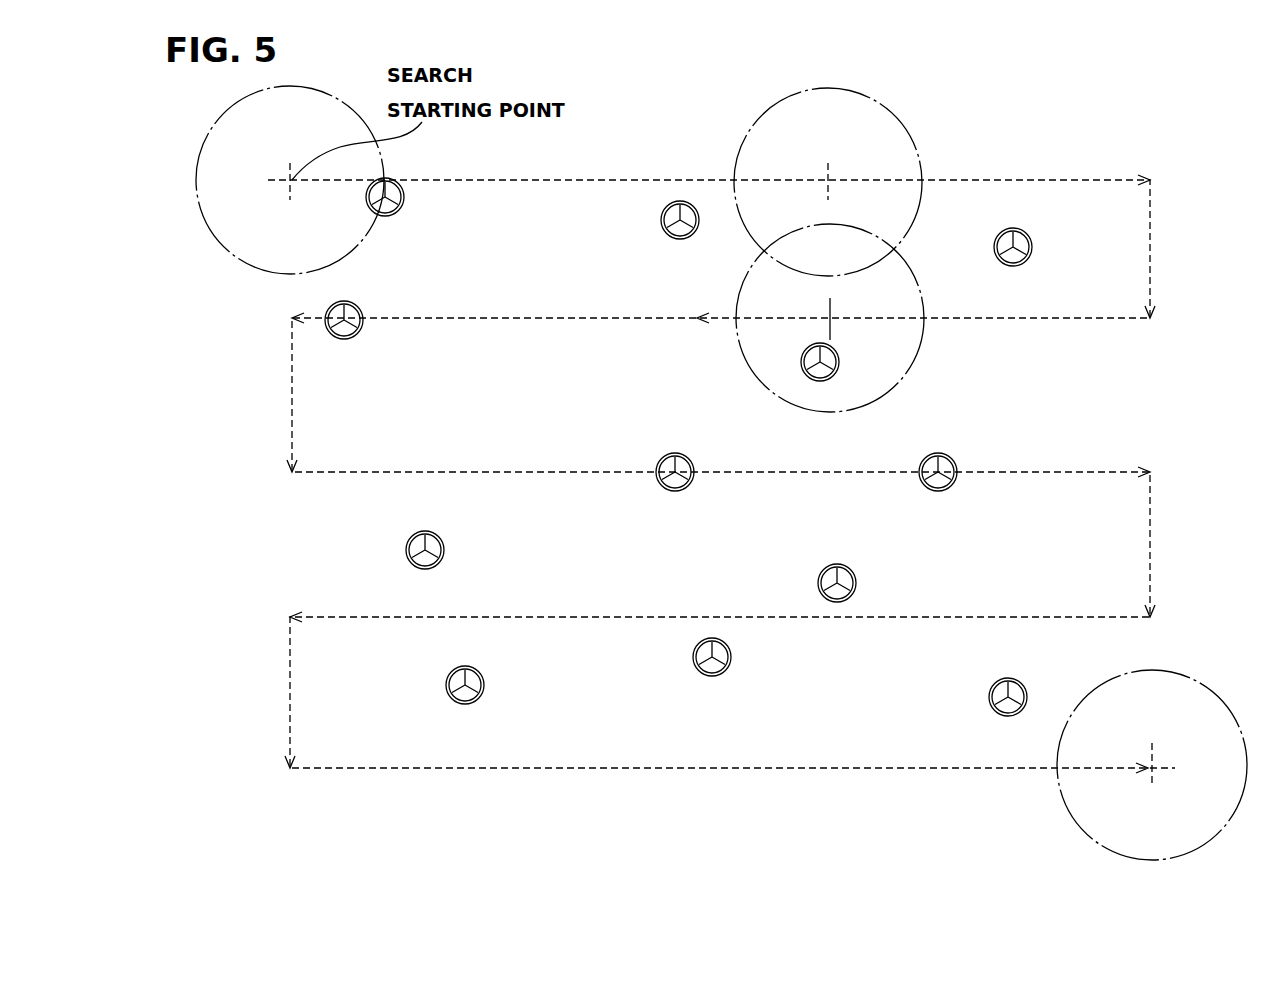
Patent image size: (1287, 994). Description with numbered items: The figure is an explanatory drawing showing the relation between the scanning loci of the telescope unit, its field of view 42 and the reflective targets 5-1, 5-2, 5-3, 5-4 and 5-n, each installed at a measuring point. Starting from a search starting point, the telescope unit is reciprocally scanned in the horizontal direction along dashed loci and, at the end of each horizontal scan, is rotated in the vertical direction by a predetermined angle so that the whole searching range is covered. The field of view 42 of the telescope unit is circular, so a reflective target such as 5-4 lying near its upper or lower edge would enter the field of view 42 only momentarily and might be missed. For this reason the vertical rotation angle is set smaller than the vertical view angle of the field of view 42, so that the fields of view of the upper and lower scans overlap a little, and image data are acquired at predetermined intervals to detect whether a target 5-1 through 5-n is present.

The reflective target 5-1 is at (405, 200).
The reflective target 5-2 is at (675, 200).
The reflective target 5-3 is at (1030, 244).
The reflective target 5-4 is at (805, 366).
The reflective target 5-n is at (988, 692).
The field of view 42 is at (337, 263).